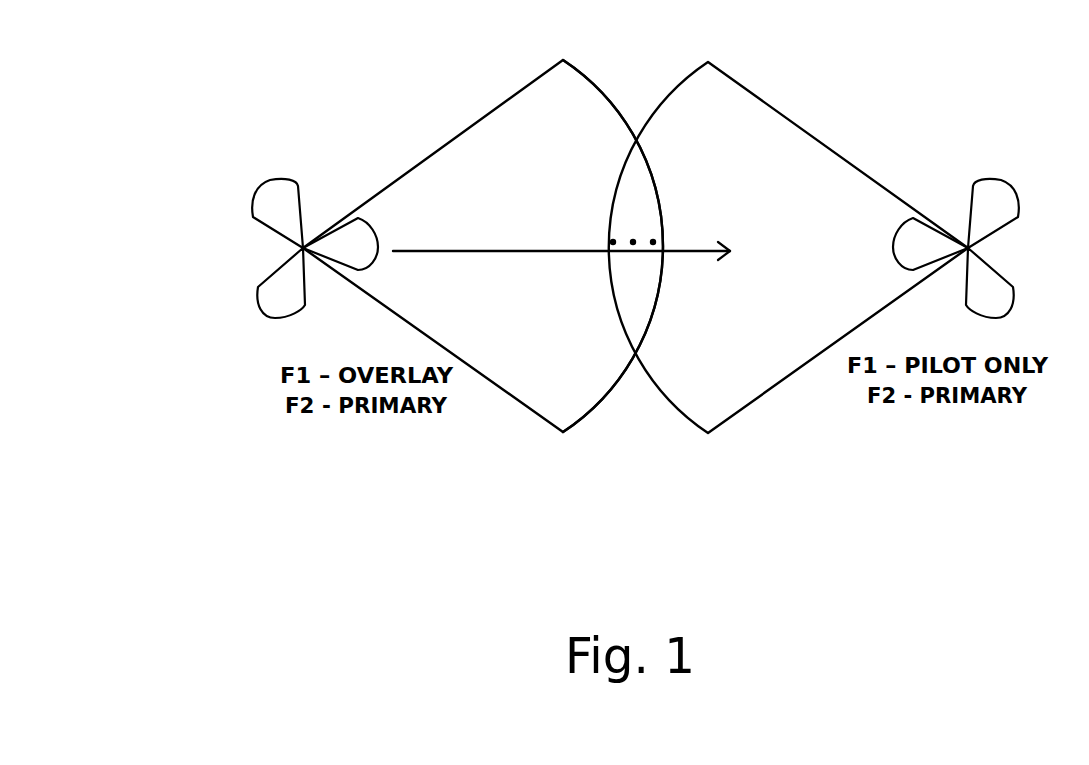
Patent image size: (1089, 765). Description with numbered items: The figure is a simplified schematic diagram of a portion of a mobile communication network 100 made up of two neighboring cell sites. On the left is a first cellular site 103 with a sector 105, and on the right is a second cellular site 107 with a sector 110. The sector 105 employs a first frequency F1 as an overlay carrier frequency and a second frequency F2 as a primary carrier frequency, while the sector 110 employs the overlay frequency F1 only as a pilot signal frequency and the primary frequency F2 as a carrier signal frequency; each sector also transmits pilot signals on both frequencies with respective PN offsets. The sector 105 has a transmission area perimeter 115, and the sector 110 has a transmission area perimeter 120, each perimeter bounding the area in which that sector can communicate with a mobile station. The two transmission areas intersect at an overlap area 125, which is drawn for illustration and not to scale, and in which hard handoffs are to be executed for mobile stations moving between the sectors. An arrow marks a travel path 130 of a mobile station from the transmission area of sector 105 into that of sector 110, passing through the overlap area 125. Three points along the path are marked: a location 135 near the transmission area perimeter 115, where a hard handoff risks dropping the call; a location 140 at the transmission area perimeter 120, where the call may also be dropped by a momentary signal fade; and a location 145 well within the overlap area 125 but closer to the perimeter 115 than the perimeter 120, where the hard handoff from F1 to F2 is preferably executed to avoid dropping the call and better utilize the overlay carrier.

The mobile communication network 100 is at (924, 566).
The first cellular site 103 is at (292, 248).
The sector 105 is at (372, 227).
The second cellular site 107 is at (959, 248).
The sector 110 is at (902, 263).
The transmission area perimeter 115 is at (528, 82).
The transmission area perimeter 120 is at (740, 82).
The overlap area 125 is at (647, 158).
The travel path 130 is at (677, 252).
The location 135 is at (653, 240).
The location 140 is at (613, 240).
The location 145 is at (633, 242).